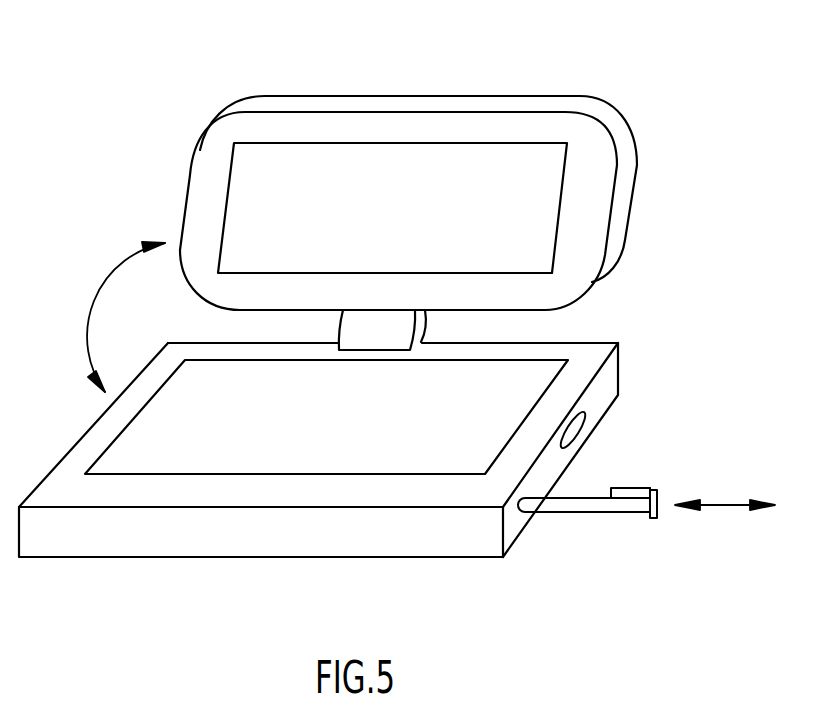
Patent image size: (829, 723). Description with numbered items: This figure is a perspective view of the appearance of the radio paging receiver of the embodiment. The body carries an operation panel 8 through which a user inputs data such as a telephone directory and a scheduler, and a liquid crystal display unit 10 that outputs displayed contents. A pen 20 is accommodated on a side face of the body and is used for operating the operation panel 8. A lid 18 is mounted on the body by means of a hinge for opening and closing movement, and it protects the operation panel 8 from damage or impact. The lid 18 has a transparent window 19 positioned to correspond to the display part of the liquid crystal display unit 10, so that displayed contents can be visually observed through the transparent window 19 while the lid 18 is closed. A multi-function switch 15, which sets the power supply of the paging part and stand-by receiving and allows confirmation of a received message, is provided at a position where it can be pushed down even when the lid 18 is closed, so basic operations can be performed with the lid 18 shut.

The operation panel 8 is at (393, 463).
The liquid crystal display unit 10 is at (242, 429).
The multi-function switch 15 is at (580, 427).
The lid 18 is at (330, 122).
The transparent window 19 is at (540, 208).
The pen 20 is at (590, 502).